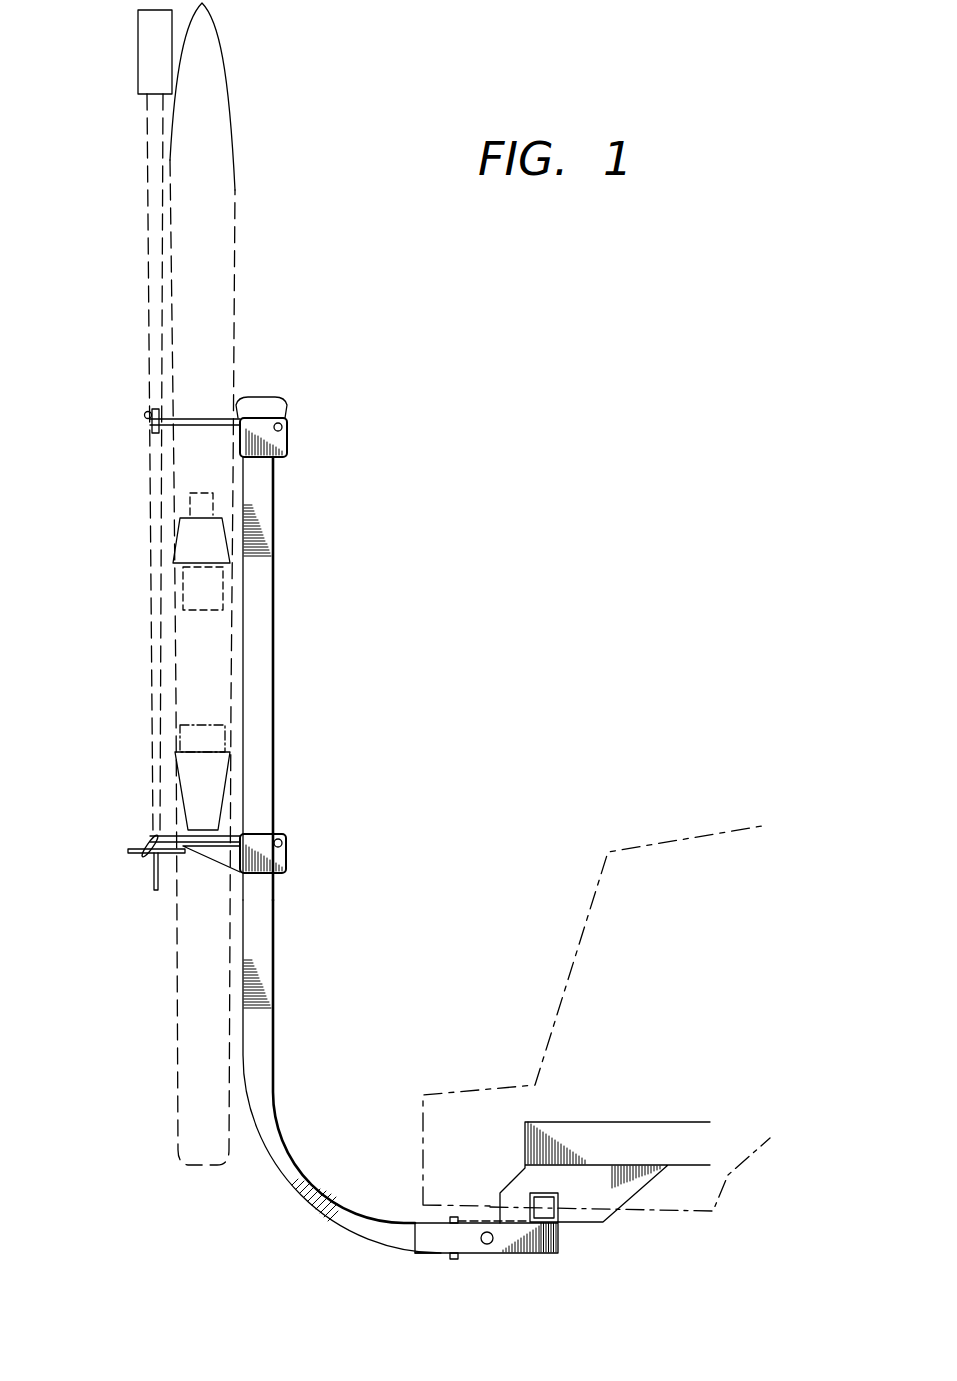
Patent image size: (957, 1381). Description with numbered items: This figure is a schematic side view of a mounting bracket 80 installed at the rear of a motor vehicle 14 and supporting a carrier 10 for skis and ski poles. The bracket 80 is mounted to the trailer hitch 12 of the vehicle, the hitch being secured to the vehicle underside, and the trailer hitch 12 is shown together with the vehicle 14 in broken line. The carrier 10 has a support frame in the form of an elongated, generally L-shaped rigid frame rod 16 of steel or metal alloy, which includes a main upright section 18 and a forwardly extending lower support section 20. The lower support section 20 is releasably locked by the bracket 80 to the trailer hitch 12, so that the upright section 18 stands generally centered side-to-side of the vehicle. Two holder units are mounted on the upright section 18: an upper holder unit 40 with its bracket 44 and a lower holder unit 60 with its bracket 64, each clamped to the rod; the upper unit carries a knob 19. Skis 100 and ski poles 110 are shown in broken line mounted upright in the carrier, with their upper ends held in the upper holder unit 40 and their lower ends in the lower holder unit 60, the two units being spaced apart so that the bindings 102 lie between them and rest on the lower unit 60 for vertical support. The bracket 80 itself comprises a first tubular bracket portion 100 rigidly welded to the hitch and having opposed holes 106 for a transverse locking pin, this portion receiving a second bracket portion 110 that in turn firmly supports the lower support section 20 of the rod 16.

The carrier 10 is at (303, 526).
The trailer hitch 12 is at (601, 1226).
The motor vehicle 14 is at (590, 910).
The frame rod 16 is at (280, 976).
The upright section 18 is at (278, 700).
The knob 19 is at (286, 408).
The lower support section 20 is at (420, 1223).
The upper holder unit 40 is at (201, 412).
The upper bracket 44 is at (288, 434).
The lower holder unit 60 is at (166, 830).
The lower bracket 64 is at (288, 848).
The bracket 80 is at (549, 1258).
The first tubular bracket portion 100 is at (222, 171).
The bindings 102 is at (181, 600).
The opposed holes 106 is at (486, 1231).
The second bracket portion 110 is at (146, 167).